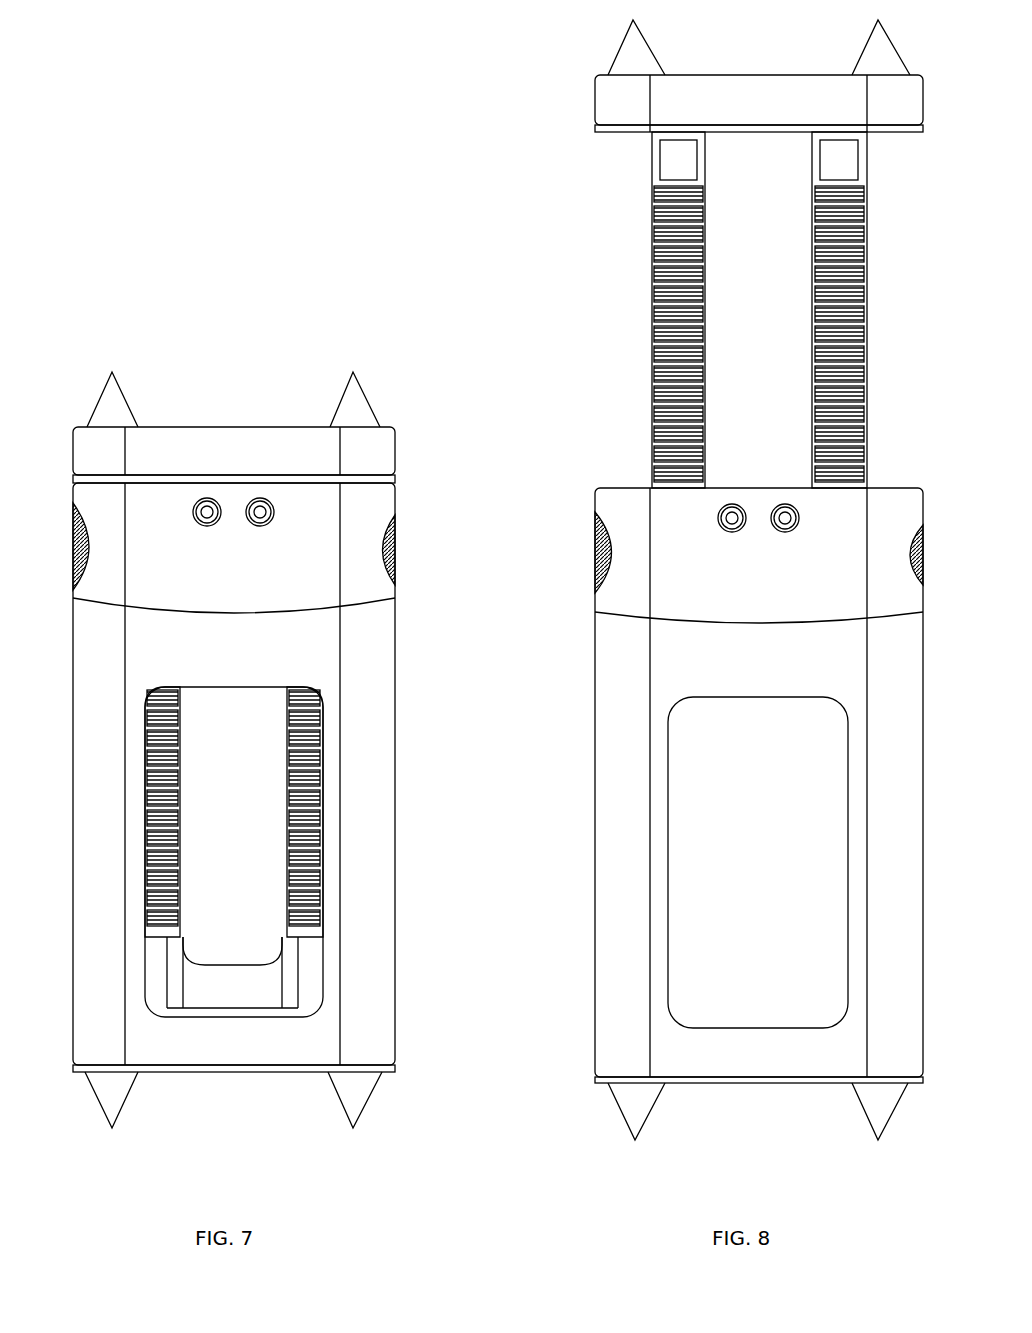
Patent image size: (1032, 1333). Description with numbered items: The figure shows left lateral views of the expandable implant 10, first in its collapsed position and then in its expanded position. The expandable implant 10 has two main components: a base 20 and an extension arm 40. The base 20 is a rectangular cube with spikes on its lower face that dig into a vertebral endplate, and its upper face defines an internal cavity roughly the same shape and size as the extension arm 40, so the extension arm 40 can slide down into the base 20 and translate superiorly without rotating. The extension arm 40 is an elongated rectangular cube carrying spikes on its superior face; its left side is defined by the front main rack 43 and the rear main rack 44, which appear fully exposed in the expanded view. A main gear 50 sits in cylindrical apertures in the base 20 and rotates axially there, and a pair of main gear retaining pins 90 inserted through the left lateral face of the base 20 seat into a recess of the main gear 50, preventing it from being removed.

In FIG. 7, the expandable implant 10 is at (265, 335).
In FIG. 8, the expandable implant 10 is at (545, 103).
In FIG. 7, the base 20 is at (352, 1022).
In FIG. 8, the base 20 is at (618, 1045).
In FIG. 7, the extension arm 40 is at (225, 462).
In FIG. 8, the extension arm 40 is at (618, 127).
In FIG. 7, the front main rack 43 is at (160, 797).
In FIG. 8, the front main rack 43 is at (655, 283).
In FIG. 7, the rear main rack 44 is at (318, 777).
In FIG. 8, the rear main rack 44 is at (867, 250).
In FIG. 7, the main gear 50 is at (92, 517).
In FIG. 8, the main gear 50 is at (600, 540).
In FIG. 7, the main gear retaining pins 90 is at (265, 522).
In FIG. 8, the main gear retaining pins 90 is at (778, 525).